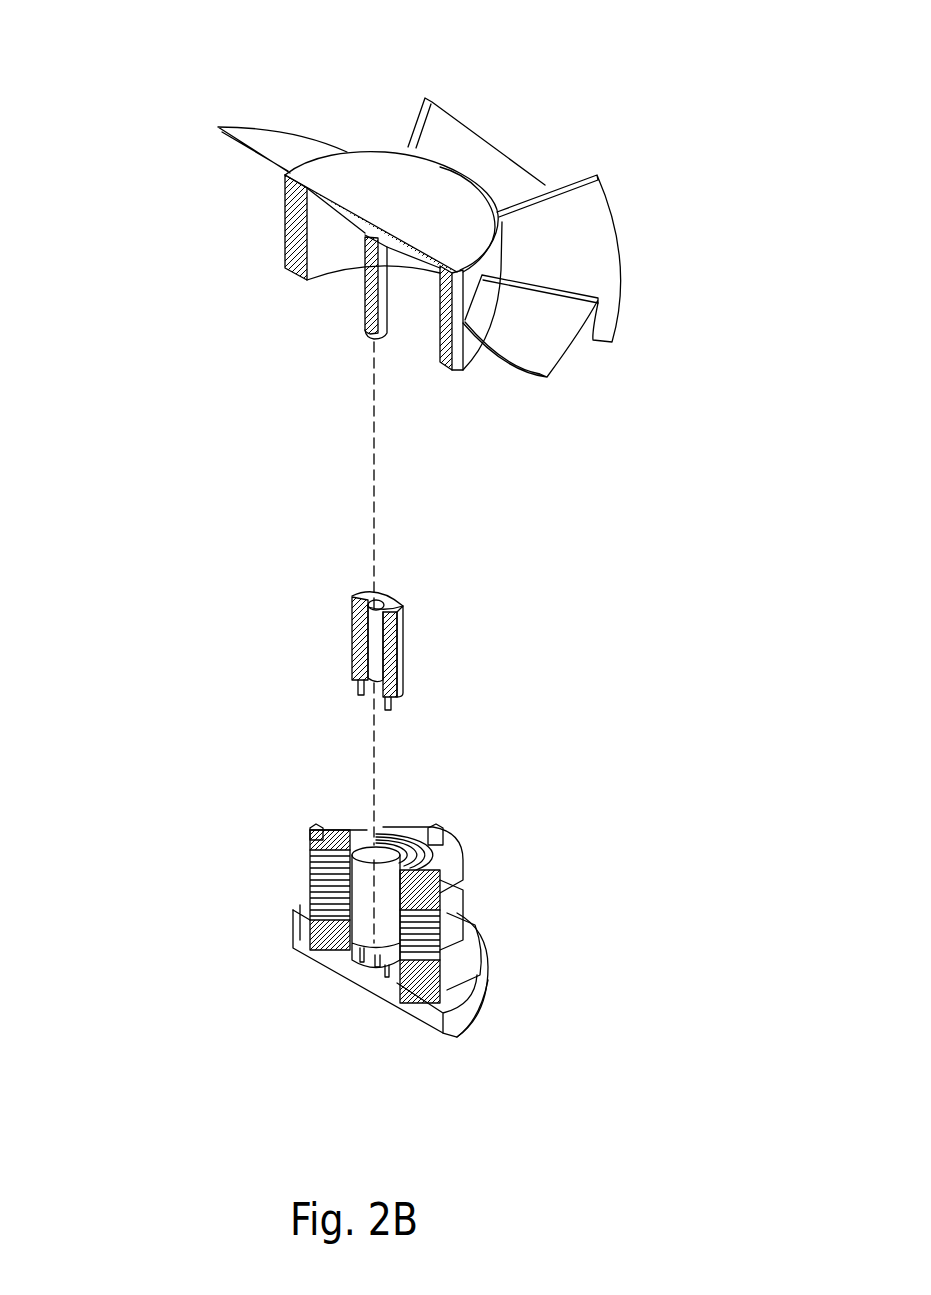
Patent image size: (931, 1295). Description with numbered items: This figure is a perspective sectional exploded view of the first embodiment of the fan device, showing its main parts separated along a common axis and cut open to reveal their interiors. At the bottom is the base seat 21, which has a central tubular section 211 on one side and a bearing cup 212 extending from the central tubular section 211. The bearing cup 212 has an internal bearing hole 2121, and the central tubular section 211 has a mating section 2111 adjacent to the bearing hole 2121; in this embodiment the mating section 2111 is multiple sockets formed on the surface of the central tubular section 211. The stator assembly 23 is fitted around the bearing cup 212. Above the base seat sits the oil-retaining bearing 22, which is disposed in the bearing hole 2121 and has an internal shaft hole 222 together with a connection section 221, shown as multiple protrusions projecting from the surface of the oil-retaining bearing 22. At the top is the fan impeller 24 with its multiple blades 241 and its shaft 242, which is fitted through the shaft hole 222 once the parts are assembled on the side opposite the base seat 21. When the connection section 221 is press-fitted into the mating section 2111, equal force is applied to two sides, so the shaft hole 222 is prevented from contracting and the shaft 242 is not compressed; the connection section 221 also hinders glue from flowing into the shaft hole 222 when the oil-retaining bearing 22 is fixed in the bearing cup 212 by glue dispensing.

The base seat 21 is at (443, 1033).
The central tubular section 211 is at (395, 988).
The mating section 2111 is at (380, 970).
The bearing cup 212 is at (313, 863).
The bearing hole 2121 is at (337, 840).
The oil-retaining bearing 22 is at (400, 622).
The connection section 221 is at (392, 702).
The shaft hole 222 is at (368, 607).
The stator assembly 23 is at (457, 927).
The fan impeller 24 is at (432, 195).
The blades 241 is at (288, 145).
The shaft 242 is at (373, 318).